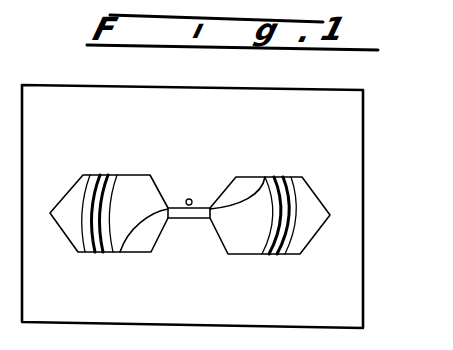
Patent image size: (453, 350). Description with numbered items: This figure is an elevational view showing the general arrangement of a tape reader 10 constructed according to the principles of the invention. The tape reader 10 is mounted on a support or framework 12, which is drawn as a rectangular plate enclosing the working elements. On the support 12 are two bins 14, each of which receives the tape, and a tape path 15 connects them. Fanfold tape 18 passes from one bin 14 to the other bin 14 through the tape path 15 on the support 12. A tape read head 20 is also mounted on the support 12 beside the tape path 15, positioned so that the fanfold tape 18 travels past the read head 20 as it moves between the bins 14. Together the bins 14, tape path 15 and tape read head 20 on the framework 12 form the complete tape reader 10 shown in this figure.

The tape reader 10 is at (370, 172).
The support or framework 12 is at (357, 210).
The bin 14 is at (100, 175).
The tape path 15 is at (172, 207).
The fanfold tape 18 is at (146, 208).
The tape read head 20 is at (195, 196).